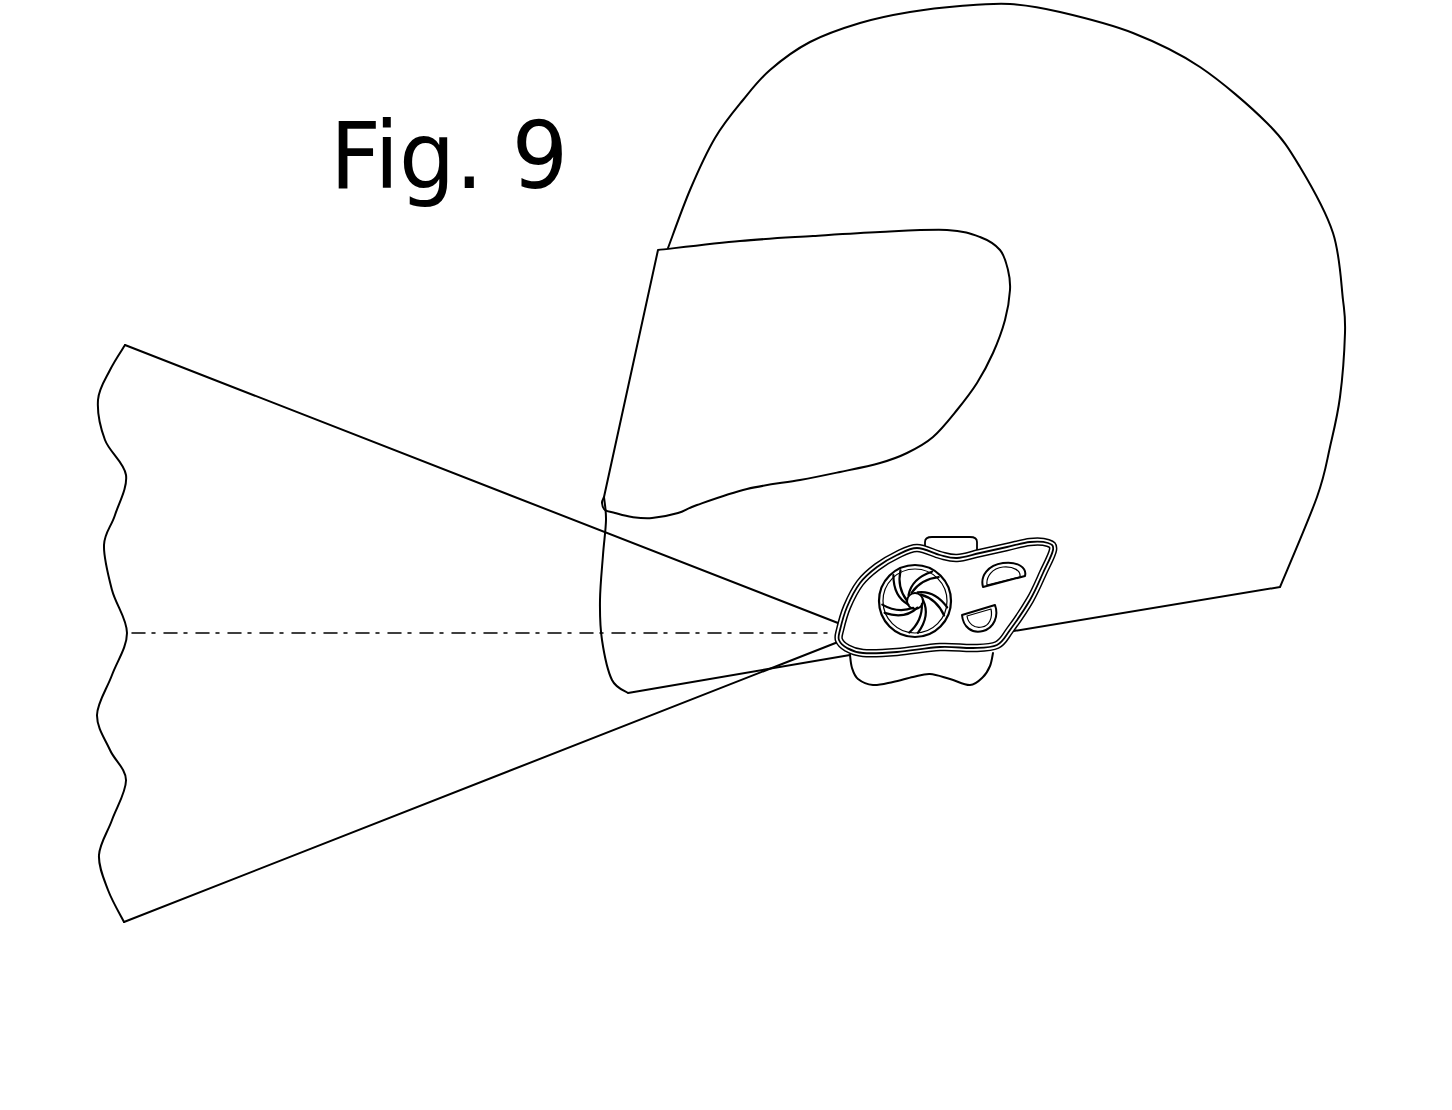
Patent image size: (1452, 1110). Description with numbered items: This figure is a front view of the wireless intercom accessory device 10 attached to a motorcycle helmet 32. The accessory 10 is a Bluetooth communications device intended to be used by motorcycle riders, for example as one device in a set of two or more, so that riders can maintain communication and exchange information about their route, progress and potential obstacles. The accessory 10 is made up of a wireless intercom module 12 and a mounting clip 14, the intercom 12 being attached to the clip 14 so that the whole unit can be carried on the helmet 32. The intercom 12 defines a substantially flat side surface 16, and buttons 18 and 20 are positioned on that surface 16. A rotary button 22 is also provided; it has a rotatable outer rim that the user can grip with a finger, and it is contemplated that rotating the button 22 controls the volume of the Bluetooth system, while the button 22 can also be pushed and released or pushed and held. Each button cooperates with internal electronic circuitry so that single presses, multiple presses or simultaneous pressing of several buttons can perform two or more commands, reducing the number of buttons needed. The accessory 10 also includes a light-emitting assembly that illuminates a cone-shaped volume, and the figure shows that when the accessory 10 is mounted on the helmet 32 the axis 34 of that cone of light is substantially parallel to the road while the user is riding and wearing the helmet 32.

The wireless intercom accessory device 10 is at (943, 644).
The wireless intercom module 12 is at (937, 577).
The mounting clip 14 is at (862, 683).
The substantially flat side surface 16 is at (865, 594).
The button 18 is at (1024, 579).
The button 20 is at (996, 618).
The rotary button 22 is at (925, 625).
The helmet 32 is at (1345, 322).
The axis 34 is at (372, 634).